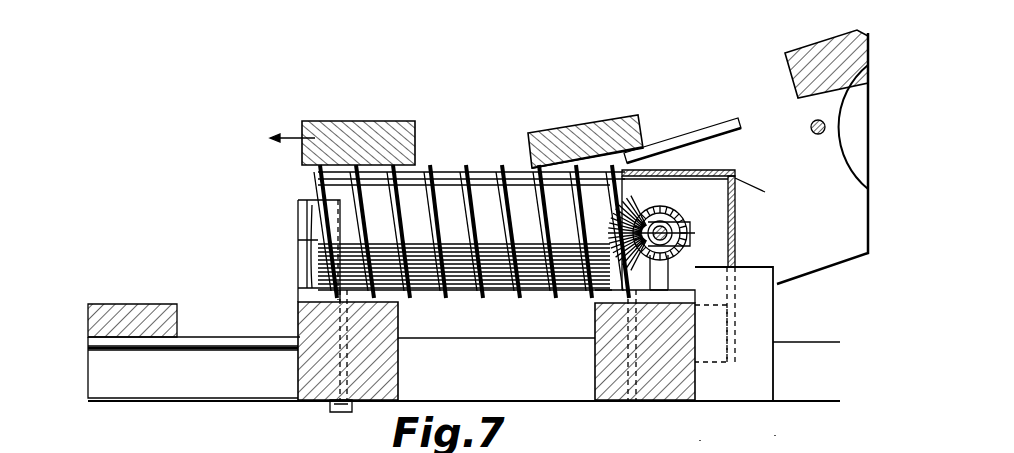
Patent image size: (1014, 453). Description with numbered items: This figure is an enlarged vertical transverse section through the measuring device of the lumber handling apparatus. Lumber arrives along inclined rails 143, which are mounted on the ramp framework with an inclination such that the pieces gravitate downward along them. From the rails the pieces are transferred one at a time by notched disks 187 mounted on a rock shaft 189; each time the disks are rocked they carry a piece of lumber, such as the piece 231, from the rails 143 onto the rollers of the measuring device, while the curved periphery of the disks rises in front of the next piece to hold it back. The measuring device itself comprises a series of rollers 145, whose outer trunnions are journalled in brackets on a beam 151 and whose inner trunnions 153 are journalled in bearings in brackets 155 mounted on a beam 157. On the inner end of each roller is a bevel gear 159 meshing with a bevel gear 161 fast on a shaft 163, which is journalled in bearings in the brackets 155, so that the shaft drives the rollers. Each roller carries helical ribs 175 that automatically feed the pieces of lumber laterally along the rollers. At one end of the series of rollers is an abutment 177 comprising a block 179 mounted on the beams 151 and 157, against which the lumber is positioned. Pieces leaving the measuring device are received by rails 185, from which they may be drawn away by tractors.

The inclined rails 143 is at (718, 130).
The rollers 145 is at (482, 175).
The beam 151 is at (312, 372).
The inner trunnions 153 is at (660, 165).
The brackets 155 is at (680, 277).
The beam 157 is at (696, 336).
The bevel gear 159 is at (634, 291).
The bevel gear 161 is at (677, 244).
The shaft 163 is at (650, 231).
The helical ribs 175 is at (318, 188).
The abutment 177 is at (767, 442).
The block 179 is at (696, 444).
The rails 185 is at (212, 338).
The disks 187 is at (745, 90).
The rock shaft 189 is at (810, 128).
The piece 231 is at (830, 46).